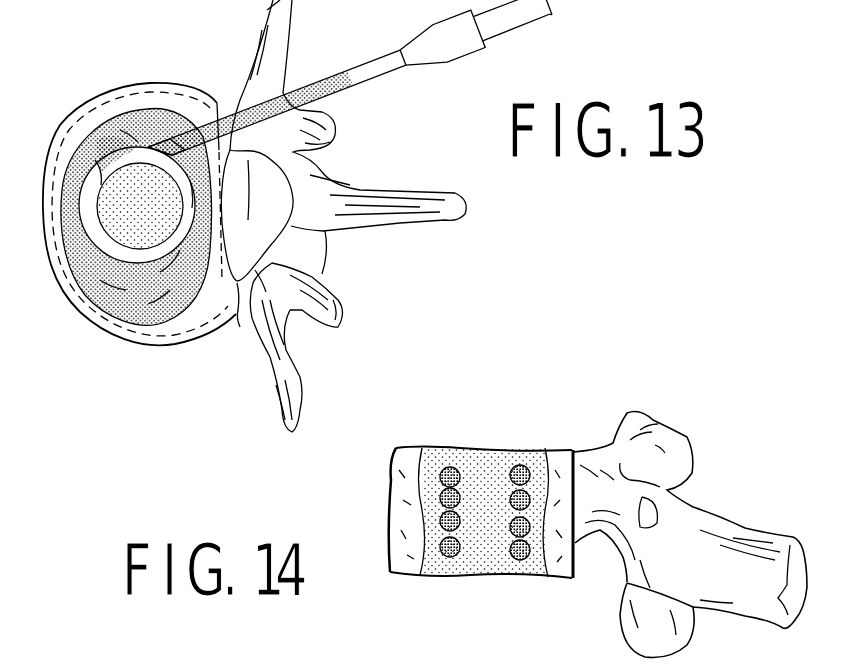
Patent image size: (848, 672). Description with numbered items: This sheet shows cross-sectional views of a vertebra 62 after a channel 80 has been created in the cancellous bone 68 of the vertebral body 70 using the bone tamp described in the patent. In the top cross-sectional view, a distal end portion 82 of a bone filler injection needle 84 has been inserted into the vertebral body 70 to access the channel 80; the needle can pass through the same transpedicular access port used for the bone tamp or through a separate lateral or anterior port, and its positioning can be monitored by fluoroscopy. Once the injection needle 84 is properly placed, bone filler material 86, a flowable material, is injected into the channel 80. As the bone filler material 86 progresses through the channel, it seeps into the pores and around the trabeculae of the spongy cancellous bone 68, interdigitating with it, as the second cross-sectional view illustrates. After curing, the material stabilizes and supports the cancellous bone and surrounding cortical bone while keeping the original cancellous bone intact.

In FIG. 13, the vertebra 62 is at (240, 327).
In FIG. 14, the vertebra 62 is at (577, 448).
In FIG. 13, the cancellous bone 68 is at (132, 280).
In FIG. 14, the cancellous bone 68 is at (437, 488).
In FIG. 13, the vertebral body 70 is at (52, 237).
In FIG. 13, the channel 80 is at (113, 247).
In FIG. 13, the distal end portion 82 is at (167, 145).
In FIG. 13, the bone filler injection needle 84 is at (377, 54).
In FIG. 13, the bone filler material 86 is at (110, 157).
In FIG. 14, the bone filler material 86 is at (473, 450).